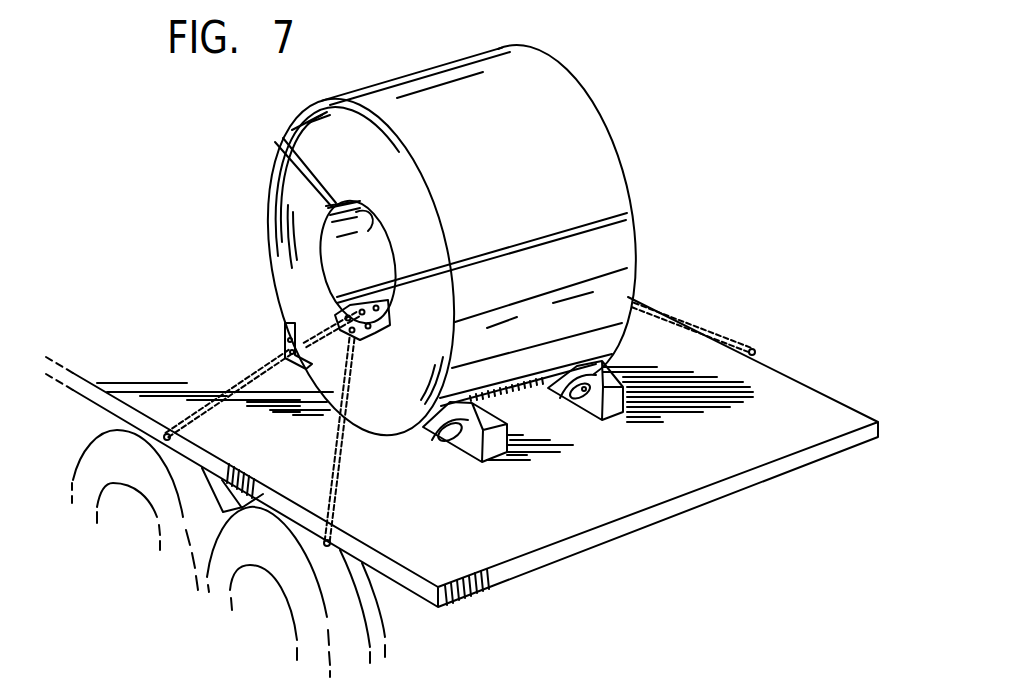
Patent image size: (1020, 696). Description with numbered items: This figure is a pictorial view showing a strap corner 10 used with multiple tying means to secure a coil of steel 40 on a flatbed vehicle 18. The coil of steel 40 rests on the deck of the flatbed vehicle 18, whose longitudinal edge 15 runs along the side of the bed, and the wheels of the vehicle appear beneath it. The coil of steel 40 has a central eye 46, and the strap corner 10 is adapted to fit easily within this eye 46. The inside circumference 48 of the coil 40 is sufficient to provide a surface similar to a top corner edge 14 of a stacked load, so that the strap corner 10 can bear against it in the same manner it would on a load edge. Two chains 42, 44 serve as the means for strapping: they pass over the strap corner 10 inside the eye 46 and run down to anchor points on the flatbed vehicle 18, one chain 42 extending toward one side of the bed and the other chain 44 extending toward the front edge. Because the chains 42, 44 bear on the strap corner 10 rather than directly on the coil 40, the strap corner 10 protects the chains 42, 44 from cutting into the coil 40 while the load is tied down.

The strap corner 10 is at (377, 350).
The top corner edge 14 is at (98, 400).
The longitudinal edge 15 is at (803, 379).
The flatbed vehicle 18 is at (592, 555).
The coil of steel 40 is at (560, 114).
The chain 42 is at (250, 368).
The chain 44 is at (337, 490).
The eye 46 is at (322, 227).
The inside circumference 48 is at (337, 213).